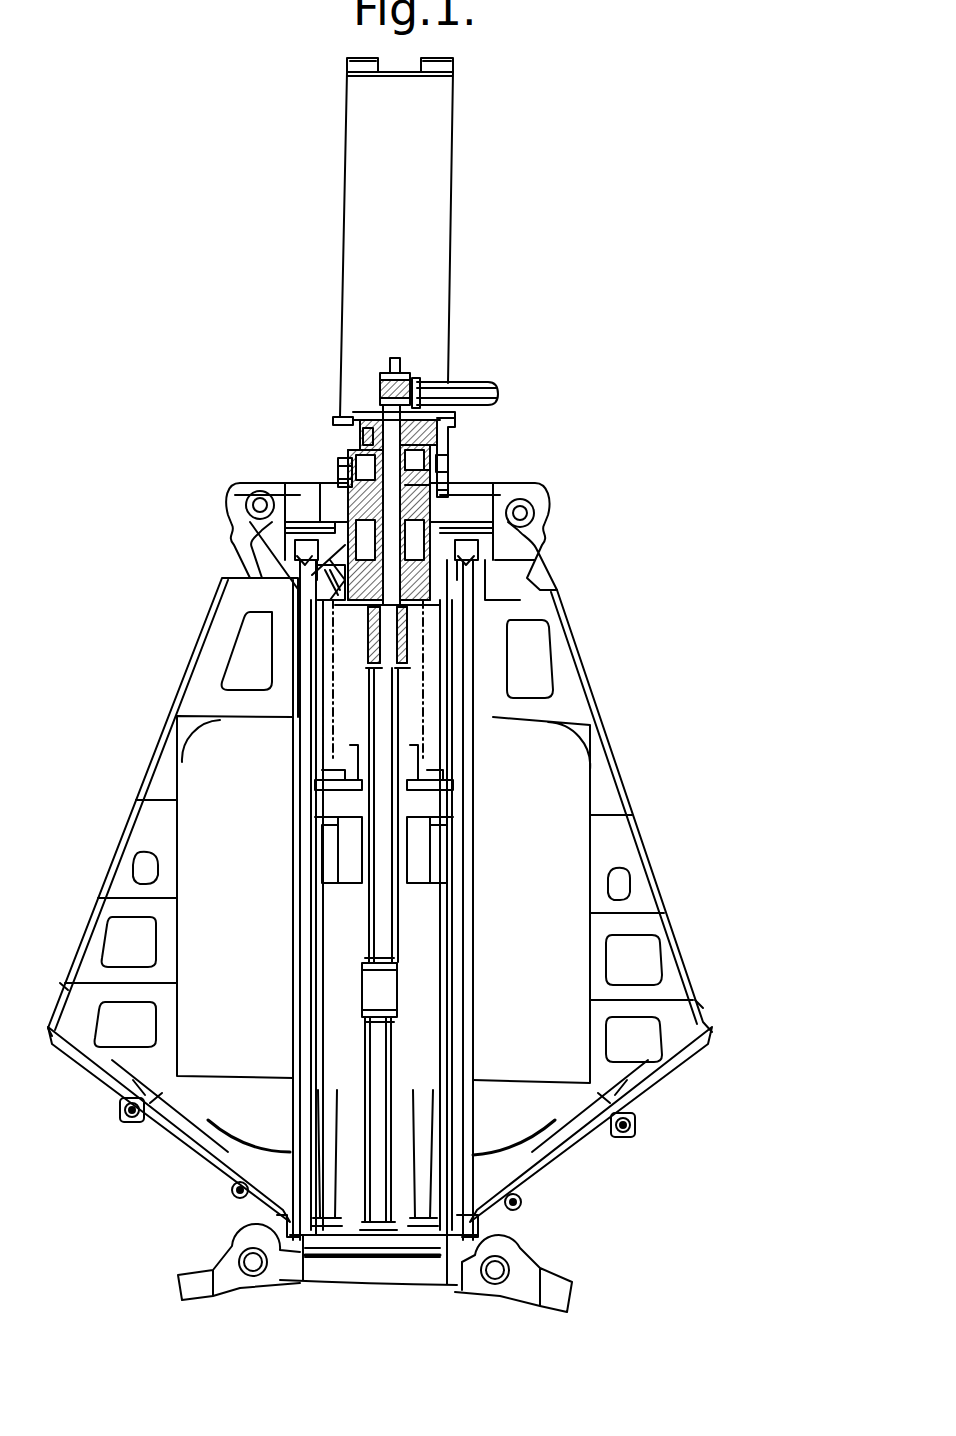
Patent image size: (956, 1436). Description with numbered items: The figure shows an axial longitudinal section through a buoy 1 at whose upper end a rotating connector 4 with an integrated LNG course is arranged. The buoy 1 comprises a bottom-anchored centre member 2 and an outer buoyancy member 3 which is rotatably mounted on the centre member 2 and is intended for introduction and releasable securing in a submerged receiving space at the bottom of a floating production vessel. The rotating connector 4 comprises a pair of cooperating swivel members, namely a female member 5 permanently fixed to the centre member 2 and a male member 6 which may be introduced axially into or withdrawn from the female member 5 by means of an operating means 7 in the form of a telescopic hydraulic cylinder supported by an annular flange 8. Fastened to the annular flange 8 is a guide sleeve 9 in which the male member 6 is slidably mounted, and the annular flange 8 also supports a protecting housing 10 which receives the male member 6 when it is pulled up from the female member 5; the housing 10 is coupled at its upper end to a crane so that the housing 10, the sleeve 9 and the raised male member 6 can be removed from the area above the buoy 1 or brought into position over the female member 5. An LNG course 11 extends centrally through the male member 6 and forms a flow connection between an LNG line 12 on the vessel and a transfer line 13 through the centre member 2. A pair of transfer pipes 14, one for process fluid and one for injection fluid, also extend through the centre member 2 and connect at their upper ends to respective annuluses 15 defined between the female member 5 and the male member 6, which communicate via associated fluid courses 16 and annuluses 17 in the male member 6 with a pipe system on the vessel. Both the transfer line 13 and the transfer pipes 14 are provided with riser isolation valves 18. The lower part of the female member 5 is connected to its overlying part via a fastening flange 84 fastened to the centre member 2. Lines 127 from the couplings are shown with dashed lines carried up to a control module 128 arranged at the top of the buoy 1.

The buoy 1 is at (180, 1136).
The centre member 2 is at (398, 1182).
The outer buoyancy member 3 is at (600, 803).
The rotating connector 4 is at (340, 520).
The female member 5 is at (477, 560).
The male member 6 is at (443, 448).
The operating means 7 is at (430, 483).
The annular flange 8 is at (345, 412).
The guide sleeve 9 is at (340, 470).
The protecting housing 10 is at (438, 262).
The LNG course 11 is at (383, 628).
The LNG line 12 is at (465, 378).
The transfer line 13 is at (392, 722).
The transfer pipes 14 is at (487, 1048).
The annuluses 15 is at (548, 505).
The fluid courses 16 is at (520, 488).
The annuluses 17 is at (505, 458).
The riser isolation valves 18 is at (388, 990).
The fastening flange 84 is at (428, 640).
The lines 127 is at (342, 615).
The control module 128 is at (303, 500).